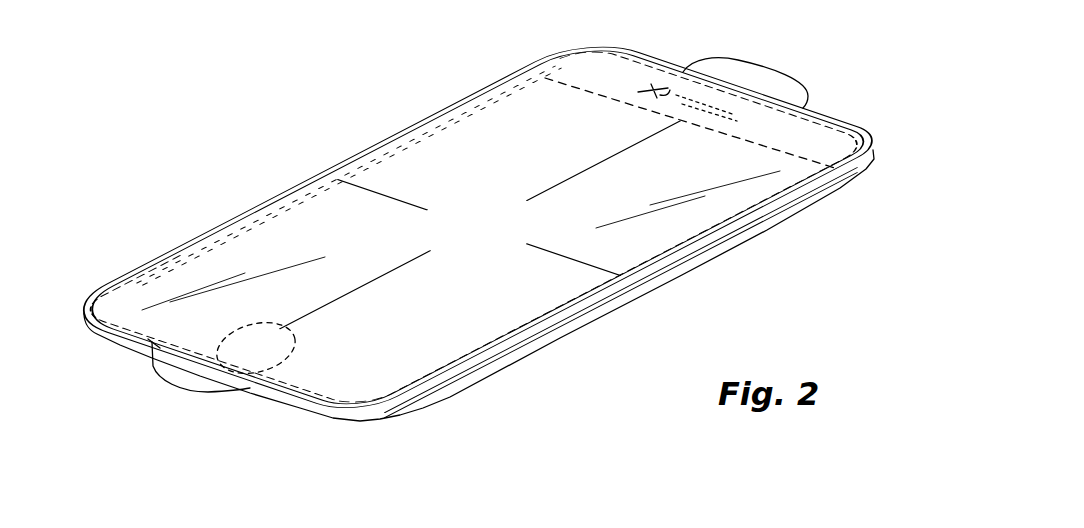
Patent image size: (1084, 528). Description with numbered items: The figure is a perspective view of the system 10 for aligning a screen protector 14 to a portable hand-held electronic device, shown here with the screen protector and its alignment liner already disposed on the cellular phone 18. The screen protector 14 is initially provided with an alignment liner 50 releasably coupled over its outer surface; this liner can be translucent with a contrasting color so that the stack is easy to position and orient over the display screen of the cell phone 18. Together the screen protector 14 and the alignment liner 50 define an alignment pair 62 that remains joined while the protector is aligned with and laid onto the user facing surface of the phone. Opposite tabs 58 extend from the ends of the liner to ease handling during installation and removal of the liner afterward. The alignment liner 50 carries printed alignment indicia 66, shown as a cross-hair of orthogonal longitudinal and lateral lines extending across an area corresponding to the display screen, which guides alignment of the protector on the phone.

The system 10 is at (494, 228).
The screen protector 14 is at (445, 108).
The cellular phone 18 is at (853, 182).
The alignment liner 50 is at (260, 240).
The tabs 58 is at (760, 88).
The alignment pair 62 is at (505, 334).
The alignment indicia 66 is at (370, 190).